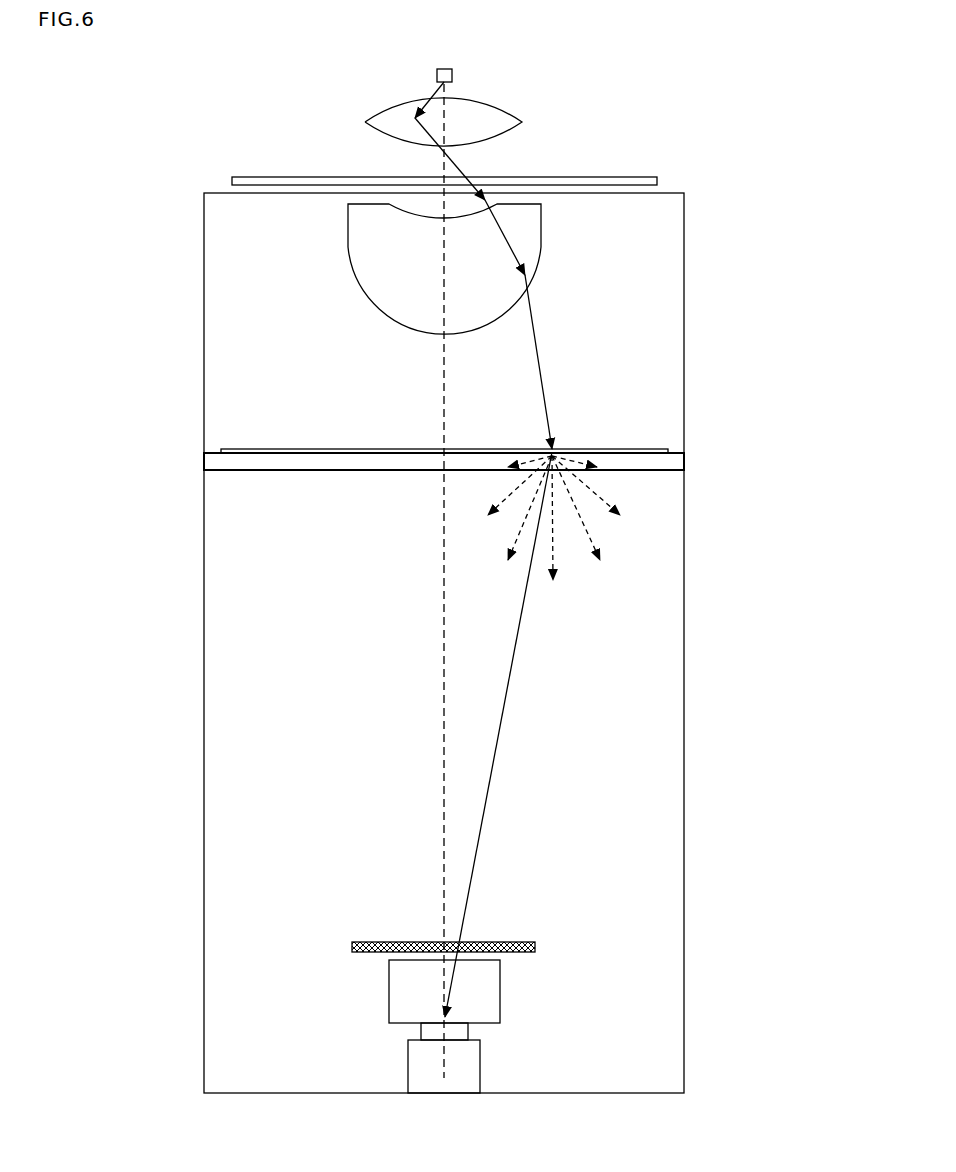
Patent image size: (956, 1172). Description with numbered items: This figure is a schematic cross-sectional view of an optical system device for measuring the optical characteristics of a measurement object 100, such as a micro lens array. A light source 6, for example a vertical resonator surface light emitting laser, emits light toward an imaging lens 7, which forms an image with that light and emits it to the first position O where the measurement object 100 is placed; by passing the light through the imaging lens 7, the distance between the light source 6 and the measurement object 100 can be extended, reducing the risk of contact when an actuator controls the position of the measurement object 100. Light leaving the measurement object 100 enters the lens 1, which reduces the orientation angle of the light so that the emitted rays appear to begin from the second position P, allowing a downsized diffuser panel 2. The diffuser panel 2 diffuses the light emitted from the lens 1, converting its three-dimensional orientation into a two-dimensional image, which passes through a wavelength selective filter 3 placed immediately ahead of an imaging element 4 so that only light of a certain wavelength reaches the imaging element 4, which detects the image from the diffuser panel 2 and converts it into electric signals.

The light source 6 is at (437, 73).
The imaging lens 7 is at (490, 122).
The measurement object 100 is at (630, 180).
The lens 1 is at (385, 280).
The diffuser panel 2 is at (640, 447).
The wavelength selective filter 3 is at (537, 943).
The imaging element 4 is at (430, 1070).